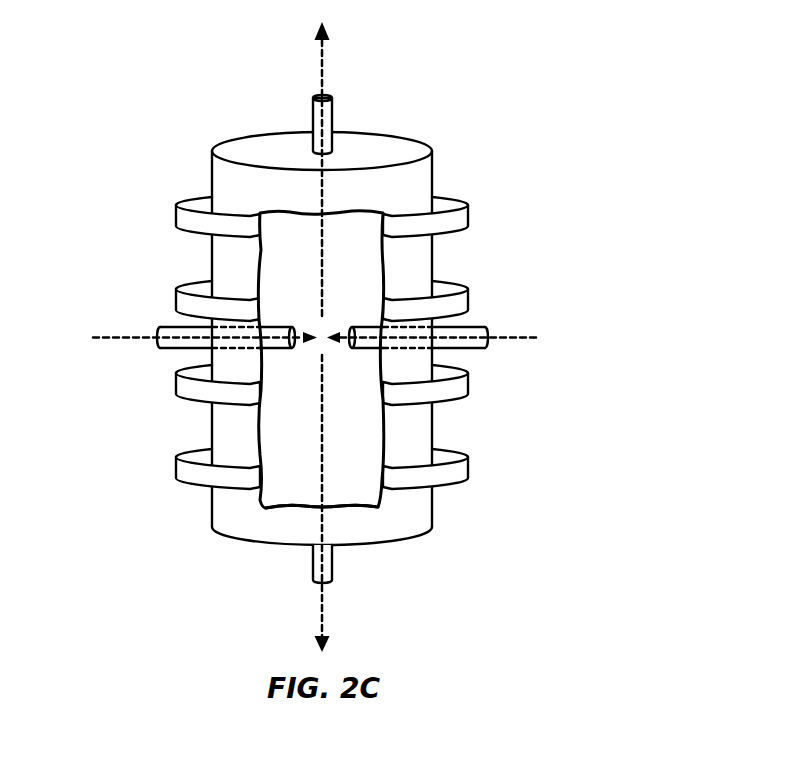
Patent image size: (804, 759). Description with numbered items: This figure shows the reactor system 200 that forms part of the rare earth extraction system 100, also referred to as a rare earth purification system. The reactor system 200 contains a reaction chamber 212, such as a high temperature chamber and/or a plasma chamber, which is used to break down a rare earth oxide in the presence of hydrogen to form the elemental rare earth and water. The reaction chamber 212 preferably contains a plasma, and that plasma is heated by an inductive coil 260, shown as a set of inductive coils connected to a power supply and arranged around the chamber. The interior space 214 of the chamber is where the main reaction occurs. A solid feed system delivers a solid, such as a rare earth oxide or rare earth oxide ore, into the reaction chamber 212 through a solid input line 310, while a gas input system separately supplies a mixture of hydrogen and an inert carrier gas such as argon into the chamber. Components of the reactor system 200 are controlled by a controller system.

The rare earth extraction system 100 is at (319, 47).
The reactor system 200 is at (315, 337).
The reaction chamber 212 is at (337, 509).
The channel 214 is at (313, 381).
The inductive coil 260 is at (449, 194).
The solid input line 310 is at (108, 337).